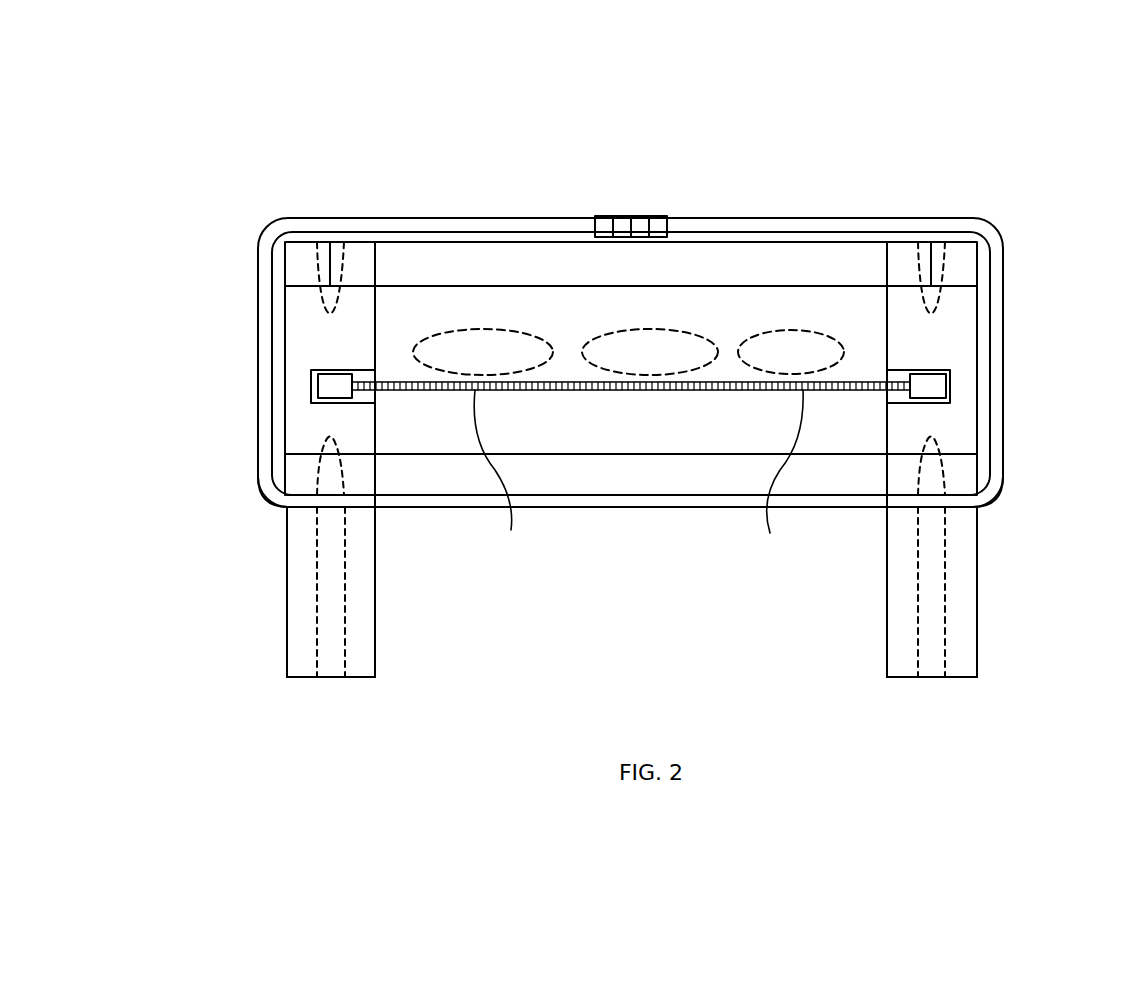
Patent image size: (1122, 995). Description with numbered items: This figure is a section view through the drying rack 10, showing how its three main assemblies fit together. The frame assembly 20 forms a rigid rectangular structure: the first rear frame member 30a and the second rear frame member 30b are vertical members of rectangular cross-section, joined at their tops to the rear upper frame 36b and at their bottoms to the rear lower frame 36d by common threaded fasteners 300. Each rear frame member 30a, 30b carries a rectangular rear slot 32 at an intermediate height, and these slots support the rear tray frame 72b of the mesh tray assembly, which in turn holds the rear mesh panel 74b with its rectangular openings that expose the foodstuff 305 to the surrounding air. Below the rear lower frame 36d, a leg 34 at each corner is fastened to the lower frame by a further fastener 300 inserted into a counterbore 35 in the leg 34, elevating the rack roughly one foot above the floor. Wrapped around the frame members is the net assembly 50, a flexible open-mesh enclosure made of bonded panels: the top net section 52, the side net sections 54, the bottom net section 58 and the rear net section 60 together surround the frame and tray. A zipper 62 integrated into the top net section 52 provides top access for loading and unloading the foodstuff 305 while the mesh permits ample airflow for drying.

The drying rack 10 is at (266, 90).
The frame assembly 20 is at (302, 682).
The first rear frame member 30a is at (300, 430).
The second rear frame member 30b is at (948, 418).
The rear slot 32 is at (332, 382).
The leg 34 is at (287, 603).
The counterbore 35 is at (346, 575).
The rear upper frame 36b is at (300, 260).
The rear lower frame 36d is at (887, 512).
The net assembly 50 is at (447, 215).
The top net section 52 is at (383, 217).
The side net section 54 is at (258, 467).
The bottom net section 58 is at (725, 480).
The rear net section 60 is at (420, 420).
The zipper 62 is at (653, 215).
The rear tray frame 72b is at (310, 380).
The rear mesh panel 74b is at (638, 475).
The fastener 300 is at (320, 276).
The foodstuff 305 is at (780, 360).